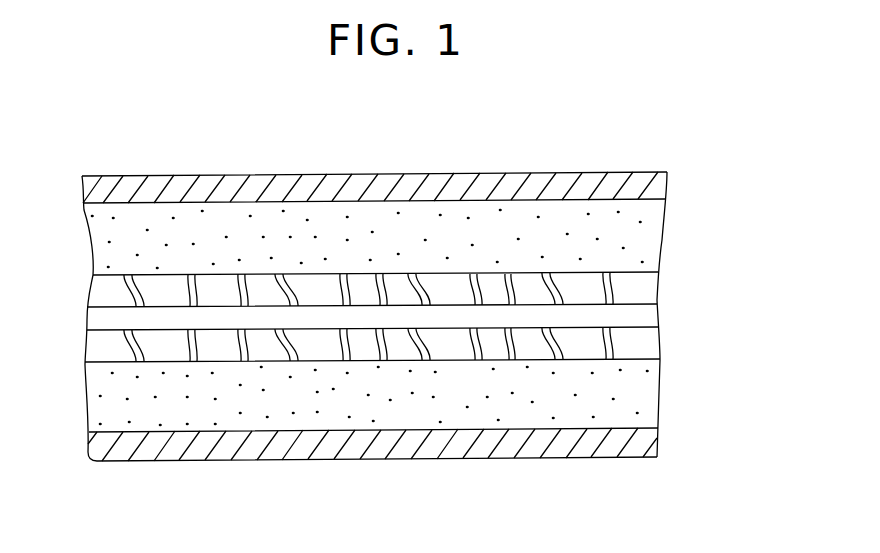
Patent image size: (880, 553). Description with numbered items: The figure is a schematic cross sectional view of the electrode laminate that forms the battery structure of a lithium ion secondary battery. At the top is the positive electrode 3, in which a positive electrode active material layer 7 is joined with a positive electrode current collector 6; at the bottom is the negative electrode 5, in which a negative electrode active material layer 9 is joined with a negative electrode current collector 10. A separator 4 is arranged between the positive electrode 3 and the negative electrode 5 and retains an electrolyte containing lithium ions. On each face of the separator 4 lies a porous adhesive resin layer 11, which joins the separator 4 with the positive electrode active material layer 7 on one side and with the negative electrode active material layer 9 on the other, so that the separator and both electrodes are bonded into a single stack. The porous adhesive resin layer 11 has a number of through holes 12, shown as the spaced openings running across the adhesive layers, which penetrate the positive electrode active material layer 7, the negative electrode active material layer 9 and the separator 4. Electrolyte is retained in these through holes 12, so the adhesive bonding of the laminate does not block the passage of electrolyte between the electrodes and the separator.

The positive electrode 3 is at (439, 219).
The separator 4 is at (650, 316).
The negative electrode 5 is at (441, 420).
The positive electrode current collector 6 is at (660, 184).
The positive electrode active material layer 7 is at (415, 242).
The negative electrode active material layer 9 is at (646, 394).
The negative electrode current collector 10 is at (413, 444).
The porous adhesive resin layer 11 is at (102, 350).
The through holes 12 is at (652, 286).